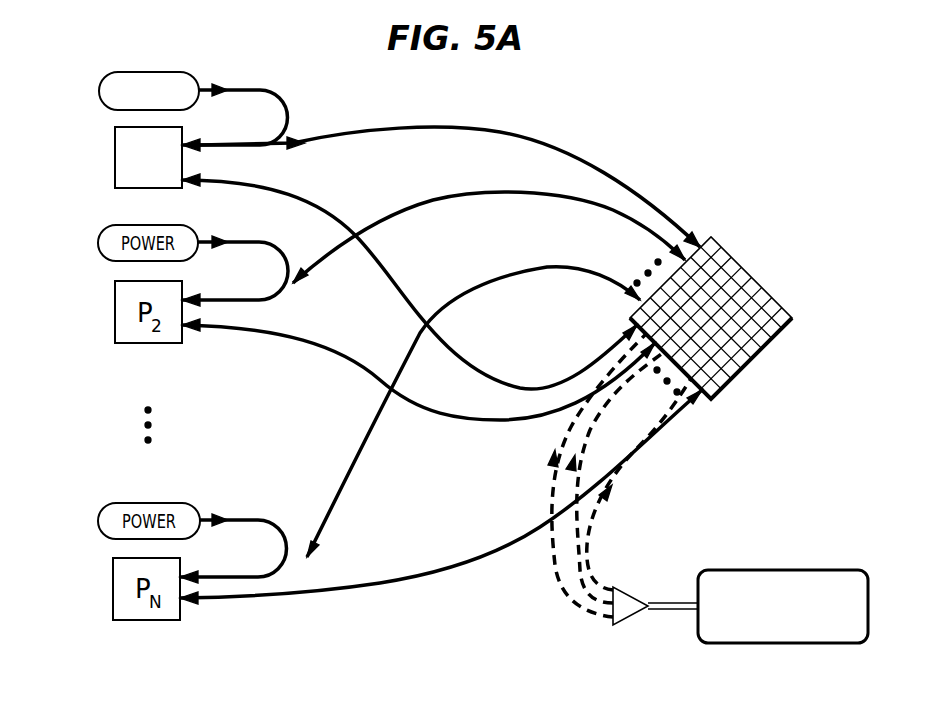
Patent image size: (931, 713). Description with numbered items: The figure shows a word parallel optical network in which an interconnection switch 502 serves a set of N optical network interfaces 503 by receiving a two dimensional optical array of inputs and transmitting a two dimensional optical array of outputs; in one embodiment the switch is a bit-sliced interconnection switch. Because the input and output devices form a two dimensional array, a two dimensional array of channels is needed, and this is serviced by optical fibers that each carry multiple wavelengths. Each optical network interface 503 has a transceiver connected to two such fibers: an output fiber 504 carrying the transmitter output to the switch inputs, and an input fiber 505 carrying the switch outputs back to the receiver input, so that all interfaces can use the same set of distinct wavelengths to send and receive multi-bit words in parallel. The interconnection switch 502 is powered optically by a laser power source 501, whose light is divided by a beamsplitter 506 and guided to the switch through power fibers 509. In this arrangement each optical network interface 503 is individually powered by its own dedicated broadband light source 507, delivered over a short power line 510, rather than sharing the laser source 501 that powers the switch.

The power source 501 is at (797, 570).
The interconnection switch 502 is at (775, 335).
The optical network interface 503 is at (115, 167).
The output fiber 504 is at (605, 283).
The input fiber 505 is at (462, 370).
The beamsplitter 506 is at (632, 620).
The broadband light source 507 is at (99, 91).
The power fibers 509 is at (578, 415).
The power line loop 510 is at (287, 117).